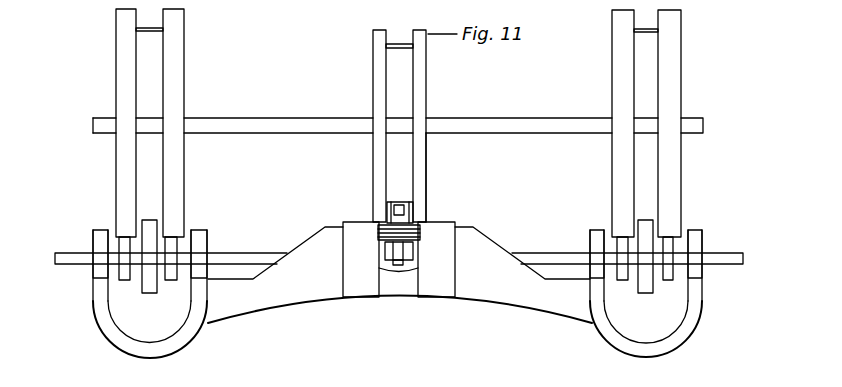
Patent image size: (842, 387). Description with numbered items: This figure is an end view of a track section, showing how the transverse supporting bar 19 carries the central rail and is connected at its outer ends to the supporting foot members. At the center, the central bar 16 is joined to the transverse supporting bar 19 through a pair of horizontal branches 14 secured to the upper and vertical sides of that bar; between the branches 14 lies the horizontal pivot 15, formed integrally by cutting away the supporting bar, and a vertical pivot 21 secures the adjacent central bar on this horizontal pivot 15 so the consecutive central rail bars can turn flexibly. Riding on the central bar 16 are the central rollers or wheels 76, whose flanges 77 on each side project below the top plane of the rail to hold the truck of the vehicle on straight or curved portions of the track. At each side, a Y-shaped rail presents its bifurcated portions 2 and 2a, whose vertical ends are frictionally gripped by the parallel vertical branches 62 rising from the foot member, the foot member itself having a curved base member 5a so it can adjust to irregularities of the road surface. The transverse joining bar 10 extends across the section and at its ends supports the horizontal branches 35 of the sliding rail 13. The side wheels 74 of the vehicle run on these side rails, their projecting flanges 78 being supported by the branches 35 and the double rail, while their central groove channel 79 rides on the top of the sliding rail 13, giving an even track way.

The side wheels 74 is at (185, 23).
The projecting flanges 78 is at (127, 63).
The central groove channel 79 is at (153, 83).
The flanges 77 is at (375, 68).
The central rollers or wheels 76 is at (440, 163).
The central bar 16 is at (403, 220).
The horizontal pivot 15 is at (460, 205).
The transverse joining bar 10 is at (248, 262).
The sliding rail 13 is at (147, 242).
The bifurcated portion 2 is at (102, 228).
The bifurcated portion 2a is at (198, 240).
The parallel and vertical branches 62 is at (93, 232).
The curved base member 5a is at (108, 325).
The branches 35 is at (172, 280).
The branches 14 is at (367, 287).
The vertical pivot 21 is at (403, 257).
The transverse supporting bar 19 is at (500, 288).